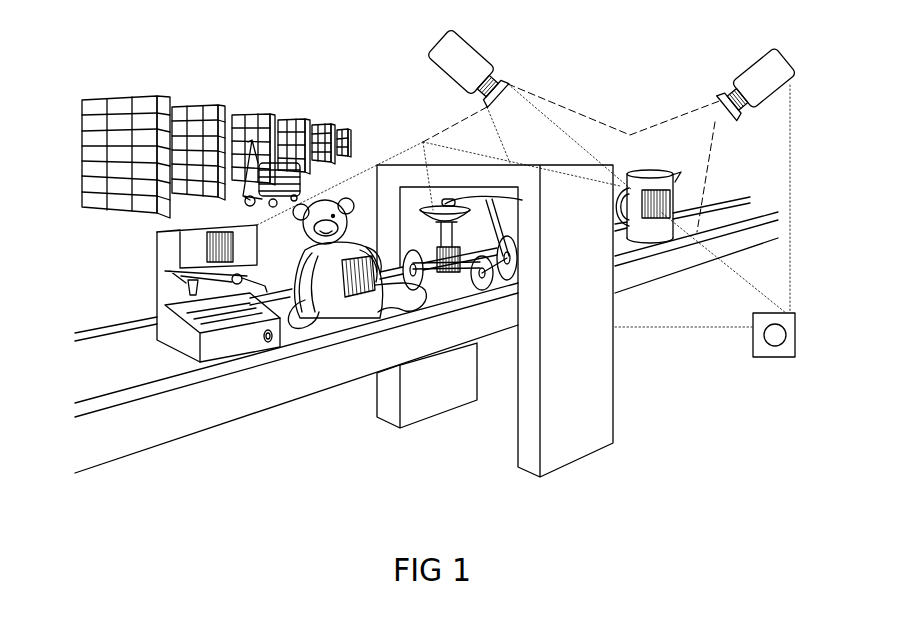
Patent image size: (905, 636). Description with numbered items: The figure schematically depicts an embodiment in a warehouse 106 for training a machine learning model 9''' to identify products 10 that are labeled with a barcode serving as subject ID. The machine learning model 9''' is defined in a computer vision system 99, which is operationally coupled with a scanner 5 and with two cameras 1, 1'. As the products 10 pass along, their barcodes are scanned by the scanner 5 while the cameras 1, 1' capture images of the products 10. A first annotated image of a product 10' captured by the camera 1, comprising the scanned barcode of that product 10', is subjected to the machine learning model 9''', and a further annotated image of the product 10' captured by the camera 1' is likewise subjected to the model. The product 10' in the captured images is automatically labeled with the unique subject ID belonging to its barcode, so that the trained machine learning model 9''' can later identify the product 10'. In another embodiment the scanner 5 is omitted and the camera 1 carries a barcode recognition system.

The warehouse 106 is at (216, 119).
The camera 1 is at (756, 78).
The camera 1' is at (475, 69).
The products 10 is at (413, 320).
The product 10' is at (657, 191).
The scanner 5 is at (617, 353).
The machine learning model 9''' is at (756, 326).
The computer vision system 99 is at (773, 360).